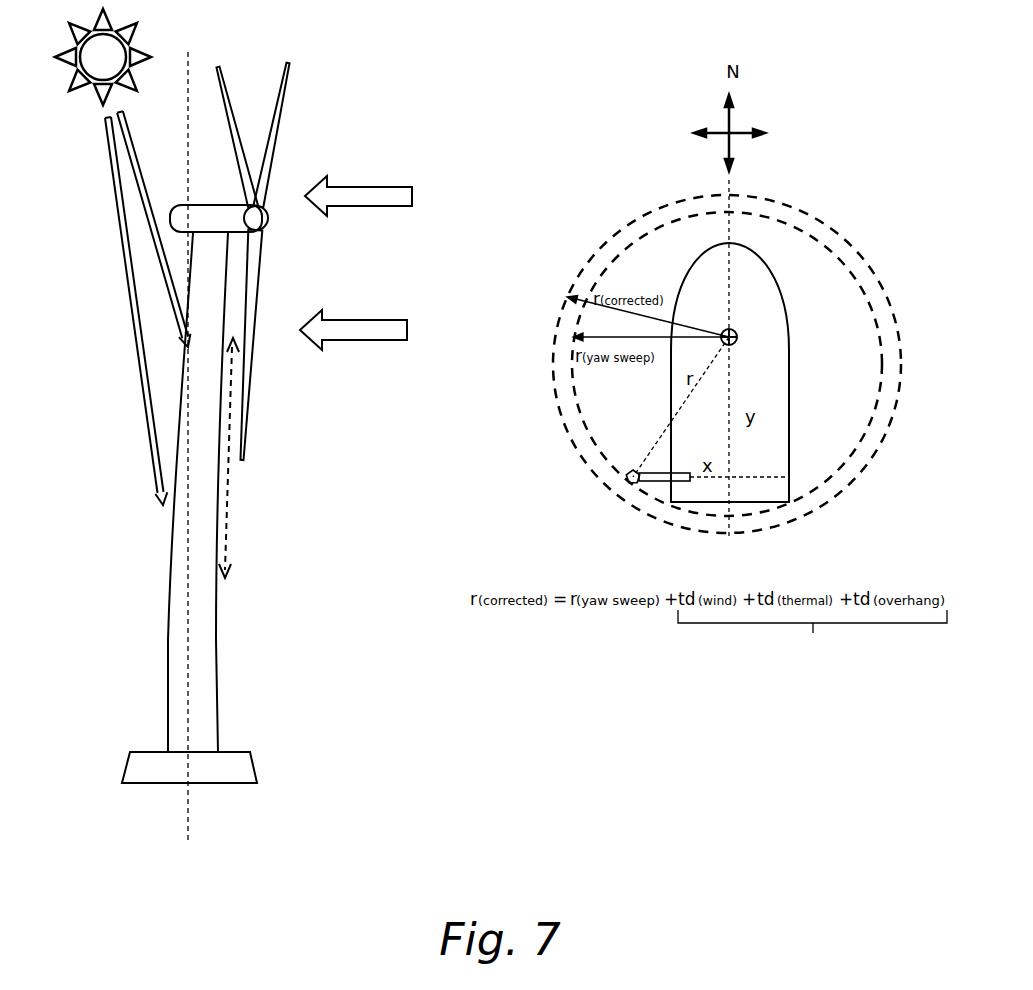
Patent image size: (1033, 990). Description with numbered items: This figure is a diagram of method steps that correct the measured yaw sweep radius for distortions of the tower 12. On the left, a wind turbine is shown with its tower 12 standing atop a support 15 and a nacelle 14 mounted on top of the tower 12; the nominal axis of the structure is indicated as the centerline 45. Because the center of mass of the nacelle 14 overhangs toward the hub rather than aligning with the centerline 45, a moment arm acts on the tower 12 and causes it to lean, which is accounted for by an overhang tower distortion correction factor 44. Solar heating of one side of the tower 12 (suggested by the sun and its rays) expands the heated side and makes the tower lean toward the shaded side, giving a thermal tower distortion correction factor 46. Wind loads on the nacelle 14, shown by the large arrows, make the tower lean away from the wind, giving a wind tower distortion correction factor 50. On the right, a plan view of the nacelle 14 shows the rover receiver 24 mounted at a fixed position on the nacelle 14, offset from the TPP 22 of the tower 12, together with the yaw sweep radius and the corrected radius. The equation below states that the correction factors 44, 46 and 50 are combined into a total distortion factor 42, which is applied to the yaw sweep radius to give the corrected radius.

The tower 12 is at (168, 638).
The nacelle 14 is at (208, 205).
The support 15 is at (253, 765).
The TPP 22 is at (735, 344).
The rover receiver 24 is at (627, 481).
The total distortion factor 42 is at (870, 668).
The overhang tower distortion correction factor 44 is at (281, 514).
The centerline 45 is at (191, 666).
The thermal tower distortion correction factor 46 is at (67, 345).
The wind tower distortion correction factor 50 is at (405, 266).